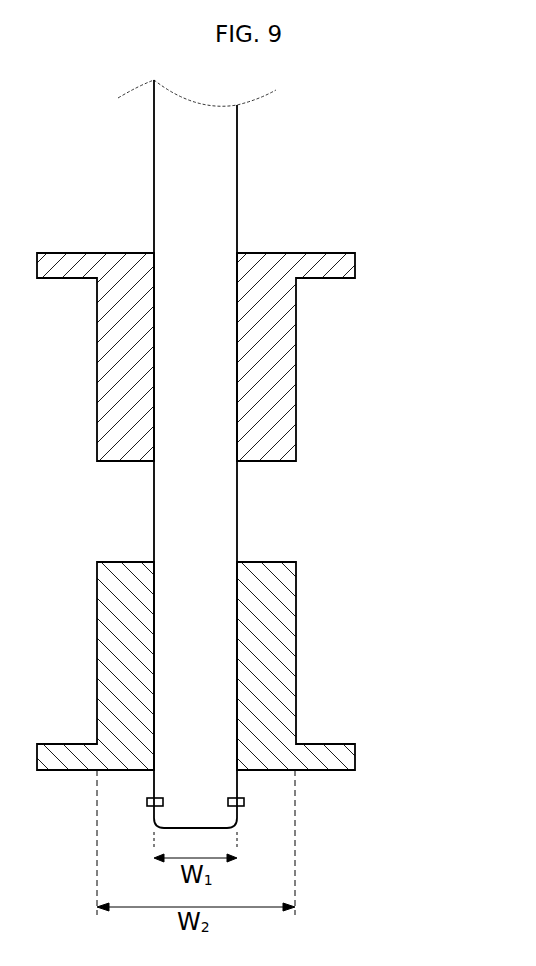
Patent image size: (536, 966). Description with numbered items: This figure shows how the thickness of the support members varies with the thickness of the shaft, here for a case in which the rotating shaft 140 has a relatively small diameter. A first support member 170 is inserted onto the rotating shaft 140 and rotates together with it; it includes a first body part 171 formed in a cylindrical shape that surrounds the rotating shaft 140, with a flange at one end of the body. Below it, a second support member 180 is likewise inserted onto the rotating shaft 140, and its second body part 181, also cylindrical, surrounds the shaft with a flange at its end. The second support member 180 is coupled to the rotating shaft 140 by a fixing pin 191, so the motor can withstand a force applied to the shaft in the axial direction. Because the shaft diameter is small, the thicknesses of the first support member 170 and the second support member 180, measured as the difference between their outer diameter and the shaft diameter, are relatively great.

The rotating shaft 140 is at (262, 194).
The first support member 170 is at (256, 357).
The first body part 171 is at (280, 375).
The second support member 180 is at (248, 666).
The second body part 181 is at (280, 665).
The fixing pin 191 is at (246, 801).